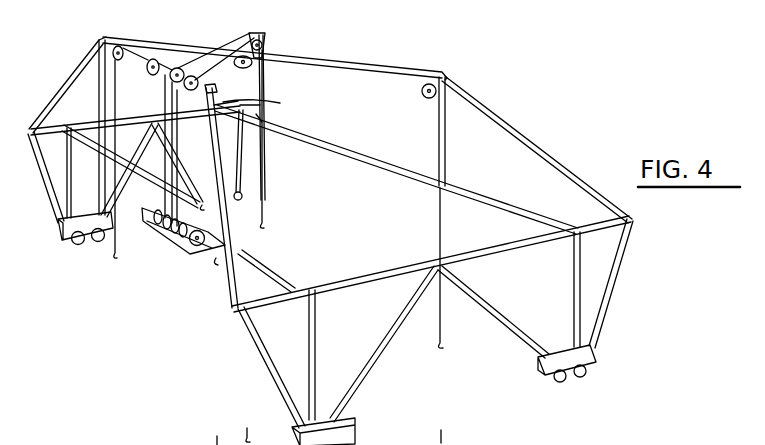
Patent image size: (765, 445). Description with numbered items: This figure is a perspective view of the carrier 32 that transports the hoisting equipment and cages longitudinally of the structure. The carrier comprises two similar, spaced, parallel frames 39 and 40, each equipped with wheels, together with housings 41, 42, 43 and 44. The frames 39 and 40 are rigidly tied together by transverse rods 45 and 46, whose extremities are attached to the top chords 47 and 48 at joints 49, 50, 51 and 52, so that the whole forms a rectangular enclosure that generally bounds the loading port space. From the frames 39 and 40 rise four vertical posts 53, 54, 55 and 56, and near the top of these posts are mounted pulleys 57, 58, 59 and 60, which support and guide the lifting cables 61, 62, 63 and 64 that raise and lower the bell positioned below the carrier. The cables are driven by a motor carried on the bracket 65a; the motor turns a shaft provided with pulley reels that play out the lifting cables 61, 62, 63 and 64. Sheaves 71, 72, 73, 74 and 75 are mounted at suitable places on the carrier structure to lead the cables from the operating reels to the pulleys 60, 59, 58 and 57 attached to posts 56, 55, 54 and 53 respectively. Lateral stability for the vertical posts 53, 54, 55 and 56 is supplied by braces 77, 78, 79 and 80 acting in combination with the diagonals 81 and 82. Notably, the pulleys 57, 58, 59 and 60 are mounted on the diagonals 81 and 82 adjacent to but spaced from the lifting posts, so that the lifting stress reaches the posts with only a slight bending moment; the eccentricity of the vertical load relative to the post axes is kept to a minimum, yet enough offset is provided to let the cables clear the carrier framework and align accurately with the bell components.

The exercise apparatus frame 32 is at (520, 106).
The frame 39 is at (626, 276).
The frame 40 is at (45, 207).
The housing 41 is at (350, 428).
The housing 42 is at (590, 352).
The housing 43 is at (68, 240).
The housing 44 is at (242, 197).
The transverse rod 45 is at (270, 275).
The transverse rod 46 is at (372, 173).
The top chord 47 is at (382, 260).
The top chord 48 is at (135, 115).
The joint 49 is at (302, 298).
The joint 50 is at (574, 228).
The joint 51 is at (67, 126).
The joint 52 is at (238, 100).
The vertical post 53 is at (210, 177).
The vertical post 54 is at (446, 158).
The vertical post 55 is at (260, 118).
The vertical post 56 is at (98, 75).
The pulley 57 is at (232, 86).
The pulley 58 is at (426, 98).
The pulley 59 is at (262, 40).
The pulley 60 is at (121, 45).
The cable 61 is at (216, 262).
The cable 62 is at (450, 343).
The cable 63 is at (266, 225).
The cable 64 is at (114, 255).
The bracket 65a is at (172, 242).
The sheave 71 is at (153, 58).
The sheave 72 is at (178, 67).
The sheave 73 is at (193, 76).
The sheave 74 is at (212, 88).
The sheave 75 is at (262, 62).
The brace 77 is at (233, 292).
The brace 78 is at (568, 170).
The brace 79 is at (236, 106).
The brace 80 is at (53, 110).
The diagonal 81 is at (368, 66).
The diagonal 82 is at (248, 68).